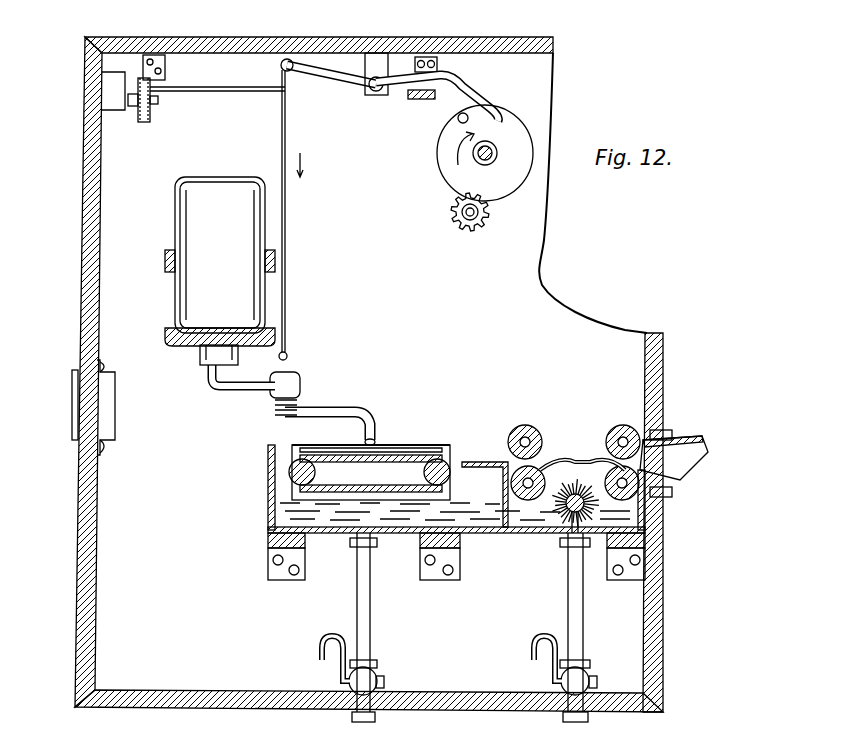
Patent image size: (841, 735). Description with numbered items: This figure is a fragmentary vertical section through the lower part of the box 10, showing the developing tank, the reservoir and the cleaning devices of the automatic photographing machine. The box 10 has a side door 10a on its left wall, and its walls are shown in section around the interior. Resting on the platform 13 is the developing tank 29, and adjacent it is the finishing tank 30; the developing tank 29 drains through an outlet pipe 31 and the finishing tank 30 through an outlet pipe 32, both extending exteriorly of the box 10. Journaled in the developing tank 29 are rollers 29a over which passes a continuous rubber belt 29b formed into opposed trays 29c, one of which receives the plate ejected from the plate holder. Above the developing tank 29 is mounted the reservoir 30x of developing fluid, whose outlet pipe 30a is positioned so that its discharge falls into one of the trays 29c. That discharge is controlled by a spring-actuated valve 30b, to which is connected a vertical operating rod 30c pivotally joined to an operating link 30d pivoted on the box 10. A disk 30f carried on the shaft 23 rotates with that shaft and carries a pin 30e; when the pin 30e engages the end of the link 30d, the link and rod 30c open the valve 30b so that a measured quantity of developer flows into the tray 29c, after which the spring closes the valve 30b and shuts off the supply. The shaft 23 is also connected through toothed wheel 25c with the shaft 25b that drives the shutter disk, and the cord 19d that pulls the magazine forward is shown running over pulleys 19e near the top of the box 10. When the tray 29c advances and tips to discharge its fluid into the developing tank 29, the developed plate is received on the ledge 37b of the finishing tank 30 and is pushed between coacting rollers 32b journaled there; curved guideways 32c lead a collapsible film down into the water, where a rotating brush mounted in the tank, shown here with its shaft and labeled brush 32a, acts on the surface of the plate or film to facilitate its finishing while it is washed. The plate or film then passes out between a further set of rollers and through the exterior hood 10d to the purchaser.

The box 10 is at (356, 37).
The side door 10a is at (78, 505).
The exterior hood 10d is at (690, 460).
The platform 13 is at (305, 548).
The cord 19d is at (246, 91).
The pulleys 19e is at (152, 95).
The shaft 23 is at (492, 158).
The shaft 25b is at (473, 232).
The toothed wheel 25c is at (486, 220).
The developing tank 29 is at (270, 470).
The rollers 29a is at (300, 480).
The continuous belt 29b is at (412, 458).
The trays 29c is at (392, 445).
The finishing tank 30 is at (522, 533).
The outlet pipe 30a is at (355, 412).
The spring-actuated valve 30b is at (300, 400).
The operating rod 30c is at (288, 282).
The operating link 30d is at (328, 76).
The pin 30e is at (458, 121).
The disk 30f is at (503, 188).
The reservoir 30x is at (185, 238).
The outlet pipe 31 is at (370, 605).
The outlet pipe 32 is at (580, 606).
The brush shaft 32a is at (568, 525).
The coacting rollers 32b is at (540, 440).
The curved guideways 32c is at (575, 490).
The ledge 37b is at (482, 462).